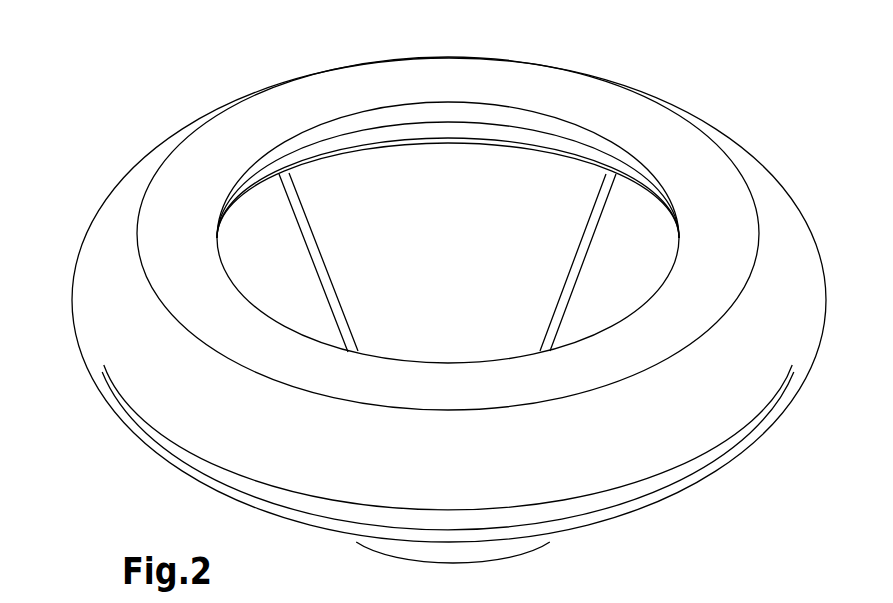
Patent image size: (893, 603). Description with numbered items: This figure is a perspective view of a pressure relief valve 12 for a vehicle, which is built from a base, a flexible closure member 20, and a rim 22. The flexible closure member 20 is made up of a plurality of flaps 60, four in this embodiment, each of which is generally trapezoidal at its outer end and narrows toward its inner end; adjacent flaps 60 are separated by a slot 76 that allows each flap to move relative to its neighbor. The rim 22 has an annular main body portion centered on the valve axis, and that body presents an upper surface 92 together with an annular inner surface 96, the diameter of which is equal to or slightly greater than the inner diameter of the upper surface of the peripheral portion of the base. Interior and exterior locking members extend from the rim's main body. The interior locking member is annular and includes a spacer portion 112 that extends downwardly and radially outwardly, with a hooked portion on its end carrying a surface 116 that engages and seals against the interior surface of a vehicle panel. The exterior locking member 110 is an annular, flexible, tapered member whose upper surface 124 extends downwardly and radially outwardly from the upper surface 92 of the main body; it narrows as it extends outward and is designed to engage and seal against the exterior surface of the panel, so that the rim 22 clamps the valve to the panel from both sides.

The pressure relief valve 12 is at (472, 289).
The flexible closure member 20 is at (550, 202).
The rim 22 is at (173, 82).
The flaps 60 is at (267, 253).
The slot 76 is at (623, 177).
The upper surface 92 is at (717, 257).
The annular inner surface 96 is at (437, 112).
The exterior locking member 110 is at (787, 332).
The spacer portion 112 is at (605, 500).
The surface 116 is at (742, 444).
The upper surface 124 is at (218, 418).